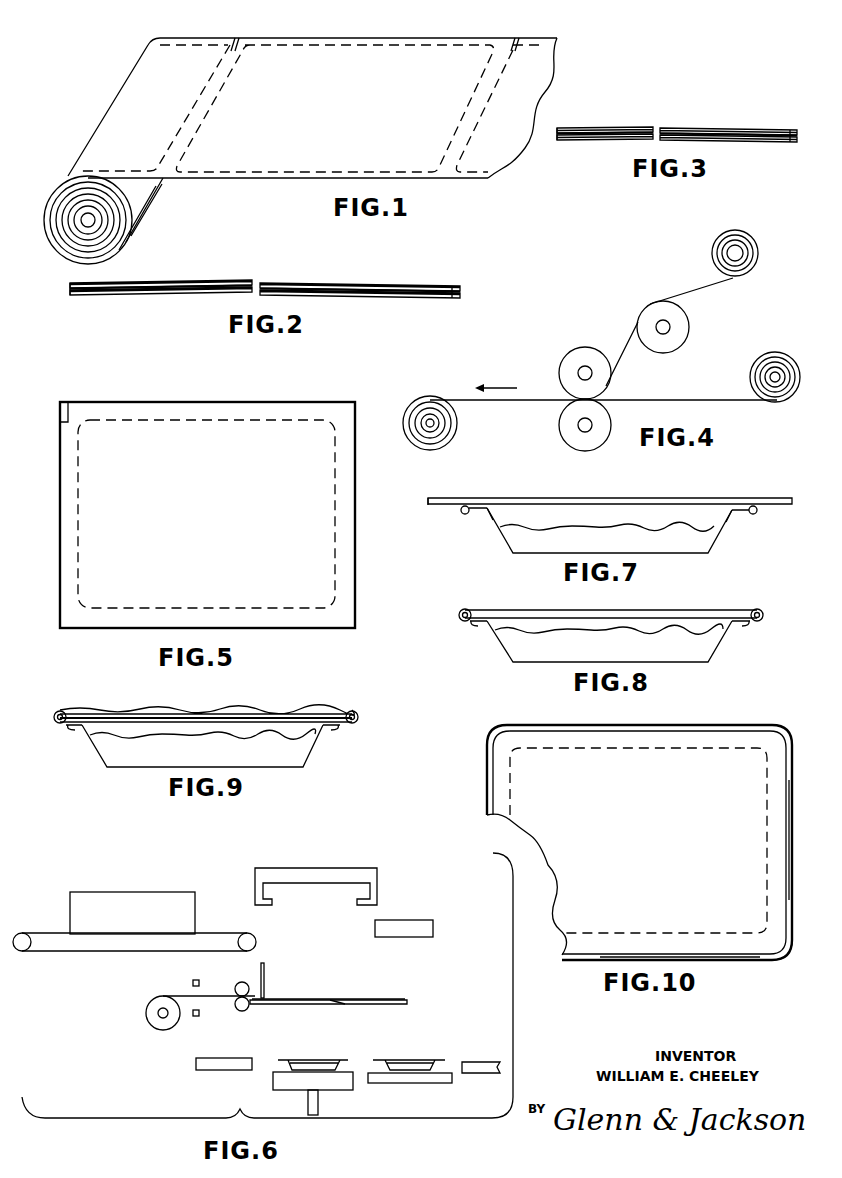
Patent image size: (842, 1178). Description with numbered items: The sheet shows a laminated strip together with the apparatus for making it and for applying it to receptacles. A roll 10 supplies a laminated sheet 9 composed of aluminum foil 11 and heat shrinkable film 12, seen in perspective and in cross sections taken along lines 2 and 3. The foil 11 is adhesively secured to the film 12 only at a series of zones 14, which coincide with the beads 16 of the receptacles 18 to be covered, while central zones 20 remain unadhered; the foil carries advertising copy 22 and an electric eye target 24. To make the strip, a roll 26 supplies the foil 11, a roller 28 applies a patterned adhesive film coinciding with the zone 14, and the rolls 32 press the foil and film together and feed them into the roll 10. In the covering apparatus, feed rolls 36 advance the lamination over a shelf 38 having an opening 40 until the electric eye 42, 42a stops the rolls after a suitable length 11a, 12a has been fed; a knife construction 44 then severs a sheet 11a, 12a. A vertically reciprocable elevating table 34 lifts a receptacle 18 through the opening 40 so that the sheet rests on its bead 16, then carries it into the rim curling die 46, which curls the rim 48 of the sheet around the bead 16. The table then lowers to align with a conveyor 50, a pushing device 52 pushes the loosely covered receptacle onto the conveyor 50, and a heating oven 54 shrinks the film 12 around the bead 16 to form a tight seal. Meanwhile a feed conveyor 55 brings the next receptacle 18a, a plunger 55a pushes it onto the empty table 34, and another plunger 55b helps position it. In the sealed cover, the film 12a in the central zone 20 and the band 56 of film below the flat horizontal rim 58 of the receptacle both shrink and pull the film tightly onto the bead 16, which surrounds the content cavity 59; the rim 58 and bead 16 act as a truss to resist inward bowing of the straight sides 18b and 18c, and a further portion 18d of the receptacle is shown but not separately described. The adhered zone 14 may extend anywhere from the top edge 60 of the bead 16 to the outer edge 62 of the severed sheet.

In FIG. 1, the laminated sheet 9 is at (225, 180).
In FIG. 2, the laminated sheet 9 is at (265, 299).
In FIG. 3, the laminated sheet 9 is at (677, 149).
In FIG. 1, the roll 10 is at (72, 245).
In FIG. 4, the roll 10 is at (458, 429).
In FIG. 6, the roll 10 is at (151, 1026).
In FIG. 2, the aluminum foil 11 is at (352, 284).
In FIG. 3, the aluminum foil 11 is at (730, 128).
In FIG. 4, the aluminum foil 11 is at (697, 290).
In FIG. 6, the aluminum foil 11 is at (202, 1032).
In FIG. 2, the heat shrinkable film 12 is at (355, 298).
In FIG. 3, the heat shrinkable film 12 is at (745, 143).
In FIG. 4, the heat shrinkable film 12 is at (694, 398).
In FIG. 6, the heat shrinkable film 12 is at (215, 1000).
In FIG. 1, the zones 14 is at (444, 172).
In FIG. 2, the zones 14 is at (148, 296).
In FIG. 3, the zones 14 is at (575, 128).
In FIG. 5, the zones 14 is at (275, 622).
In FIG. 2, the central zones 20 is at (193, 285).
In FIG. 3, the central zones 20 is at (695, 128).
In FIG. 9, the central zones 20 is at (253, 708).
In FIG. 1, the advertising copy 22 is at (490, 72).
In FIG. 5, the advertising copy 22 is at (334, 468).
In FIG. 10, the advertising copy 22 is at (766, 805).
In FIG. 1, the electric eye target 24 is at (236, 34).
In FIG. 4, the roll 26 is at (742, 236).
In FIG. 4, the roller 28 is at (680, 321).
In FIG. 4, the rolls 32 is at (582, 350).
In FIG. 5, the foil of severed sheet 11a is at (206, 491).
In FIG. 7, the foil of severed sheet 11a is at (610, 487).
In FIG. 8, the foil of severed sheet 11a is at (617, 601).
In FIG. 9, the foil of severed sheet 11a is at (220, 708).
In FIG. 6, the foil of severed sheet 11a is at (336, 985).
In FIG. 5, the film of severed sheet 12a is at (206, 491).
In FIG. 7, the film of severed sheet 12a is at (695, 500).
In FIG. 8, the film of severed sheet 12a is at (688, 610).
In FIG. 9, the film of severed sheet 12a is at (278, 722).
In FIG. 6, the film of severed sheet 12a is at (340, 998).
In FIG. 7, the bead 16 is at (466, 514).
In FIG. 8, the bead 16 is at (462, 625).
In FIG. 9, the bead 16 is at (55, 710).
In FIG. 7, the receptacle 18 is at (518, 544).
In FIG. 8, the receptacle 18 is at (512, 650).
In FIG. 9, the receptacle 18 is at (102, 753).
In FIG. 10, the receptacle 18 is at (641, 873).
In FIG. 6, the receptacle 18 is at (322, 1062).
In FIG. 6, the next receptacle 18a is at (410, 1062).
In FIG. 10, the straight side 18b is at (733, 958).
In FIG. 10, the straight side 18c is at (790, 872).
In FIG. 10, the tray corner 18d is at (790, 955).
In FIG. 6, the elevating table 34 is at (295, 1085).
In FIG. 6, the feed rolls 36 is at (240, 1012).
In FIG. 6, the shelf 38 is at (348, 1002).
In FIG. 6, the opening 40 is at (345, 1006).
In FIG. 6, the electric eye 42 is at (192, 984).
In FIG. 6, the electric eye element 42a is at (194, 1018).
In FIG. 6, the knife construction 44 is at (265, 978).
In FIG. 6, the rim curling die 46 is at (383, 864).
In FIG. 8, the rim of sheet 48 is at (457, 616).
In FIG. 9, the rim of sheet 48 is at (52, 716).
In FIG. 6, the conveyor 50 is at (225, 934).
In FIG. 6, the pushing device 52 is at (415, 925).
In FIG. 6, the heating oven 54 is at (145, 898).
In FIG. 6, the feed conveyor 55 is at (428, 1085).
In FIG. 6, the plunger 55a is at (480, 1062).
In FIG. 6, the plunger 55b is at (225, 1072).
In FIG. 8, the band of film 56 is at (478, 623).
In FIG. 9, the band of film 56 is at (72, 728).
In FIG. 7, the rim 58 is at (487, 515).
In FIG. 7, the content cavity 59 is at (580, 535).
In FIG. 8, the content cavity 59 is at (580, 645).
In FIG. 9, the content cavity 59 is at (165, 750).
In FIG. 7, the top edge of bead 60 is at (470, 506).
In FIG. 7, the outer edge of severed sheet 62 is at (428, 498).
In FIG. 1, the section line 2— 2 is at (162, 125).
In FIG. 1, the section line 3— 3 is at (360, 14).